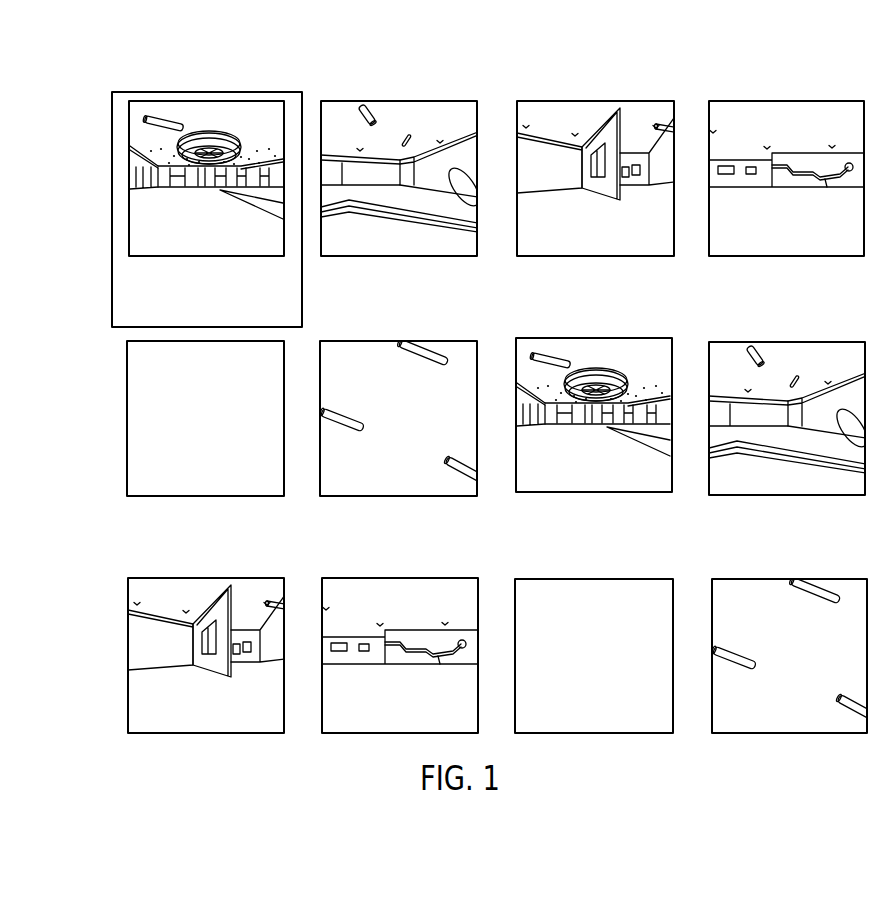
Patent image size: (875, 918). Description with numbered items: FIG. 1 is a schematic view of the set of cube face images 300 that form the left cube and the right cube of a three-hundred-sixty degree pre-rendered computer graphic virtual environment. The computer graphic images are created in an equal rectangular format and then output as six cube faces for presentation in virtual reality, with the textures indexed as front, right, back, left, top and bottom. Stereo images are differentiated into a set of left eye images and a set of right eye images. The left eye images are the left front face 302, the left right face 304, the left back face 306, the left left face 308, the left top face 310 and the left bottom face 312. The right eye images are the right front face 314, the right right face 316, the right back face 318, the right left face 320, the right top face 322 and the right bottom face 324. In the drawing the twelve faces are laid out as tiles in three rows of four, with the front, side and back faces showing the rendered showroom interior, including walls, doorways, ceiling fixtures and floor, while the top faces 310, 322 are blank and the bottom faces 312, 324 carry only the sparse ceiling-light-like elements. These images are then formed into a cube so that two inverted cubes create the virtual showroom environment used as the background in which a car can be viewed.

The set of training images 300 is at (105, 94).
The left front face 302 is at (203, 91).
The left right face 304 is at (400, 101).
The left back face 306 is at (592, 101).
The left left face 308 is at (792, 101).
The left top face 310 is at (127, 387).
The left bottom face 312 is at (370, 341).
The right front face 314 is at (572, 338).
The right right face 316 is at (783, 342).
The right back face 318 is at (128, 647).
The right left face 320 is at (370, 578).
The right top face 322 is at (565, 579).
The right bottom face 324 is at (755, 578).